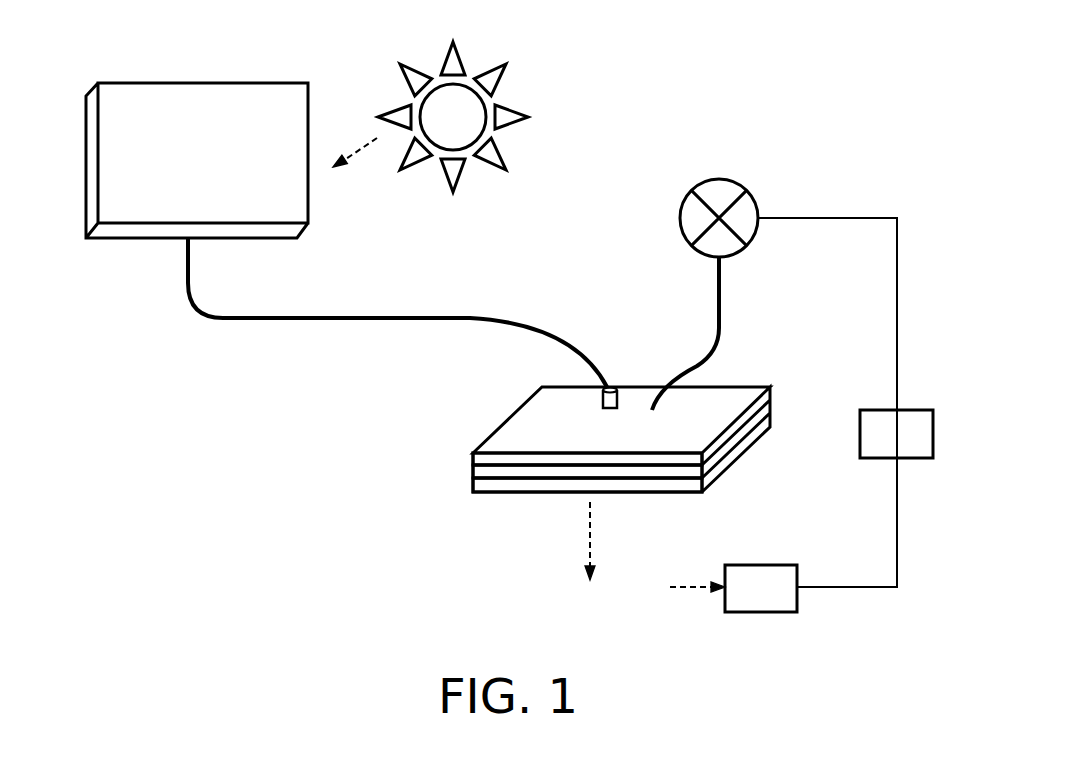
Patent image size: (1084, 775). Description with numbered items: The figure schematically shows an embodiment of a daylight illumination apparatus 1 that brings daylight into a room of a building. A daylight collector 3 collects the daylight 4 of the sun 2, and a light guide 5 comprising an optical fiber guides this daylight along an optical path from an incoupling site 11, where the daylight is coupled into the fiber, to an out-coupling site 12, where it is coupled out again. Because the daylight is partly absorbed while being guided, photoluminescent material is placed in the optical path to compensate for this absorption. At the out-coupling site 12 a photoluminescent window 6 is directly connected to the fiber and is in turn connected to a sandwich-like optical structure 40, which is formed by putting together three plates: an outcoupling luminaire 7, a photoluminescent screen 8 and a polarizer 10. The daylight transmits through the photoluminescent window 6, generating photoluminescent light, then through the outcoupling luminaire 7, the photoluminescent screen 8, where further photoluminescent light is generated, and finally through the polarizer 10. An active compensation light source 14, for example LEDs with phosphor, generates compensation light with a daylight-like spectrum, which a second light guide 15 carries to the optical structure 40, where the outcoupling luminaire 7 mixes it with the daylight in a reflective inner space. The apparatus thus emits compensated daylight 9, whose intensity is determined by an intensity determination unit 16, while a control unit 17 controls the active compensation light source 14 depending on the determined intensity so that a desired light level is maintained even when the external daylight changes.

The daylight illumination apparatus 1 is at (150, 378).
The sun 2 is at (537, 87).
The daylight collector 3 is at (204, 100).
The daylight 4 is at (352, 152).
The light guide 5 is at (238, 320).
The photoluminescent window 6 is at (619, 400).
The outcoupling luminaire 7 is at (480, 460).
The photoluminescent screen 8 is at (740, 437).
The compensated daylight 9 is at (588, 539).
The polarizer 10 is at (727, 460).
The incoupling site 11 is at (172, 255).
The out-coupling site 12 is at (616, 362).
The active compensation light source 14 is at (766, 188).
The light guide 15 is at (722, 298).
The intensity determination unit 16 is at (758, 564).
The control unit 17 is at (870, 460).
The sandwich-like optical structure 40 is at (654, 427).